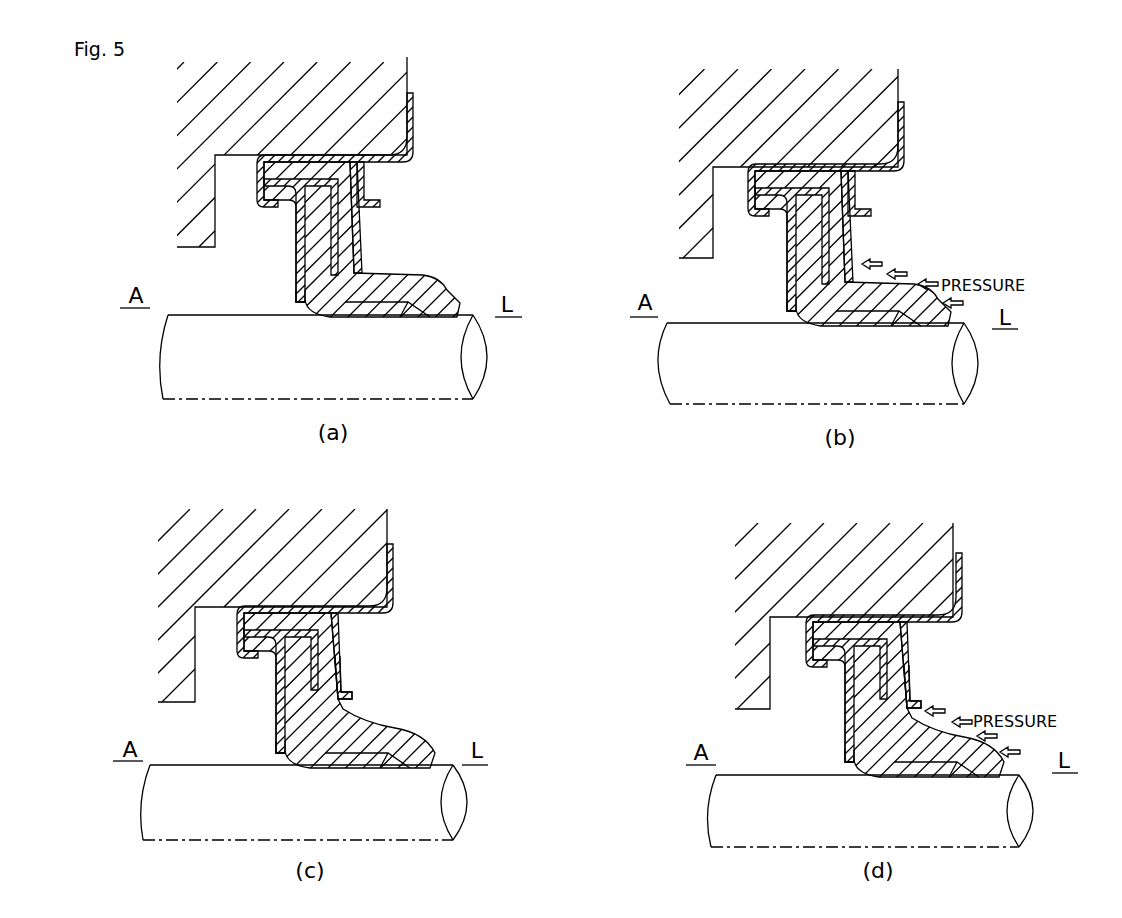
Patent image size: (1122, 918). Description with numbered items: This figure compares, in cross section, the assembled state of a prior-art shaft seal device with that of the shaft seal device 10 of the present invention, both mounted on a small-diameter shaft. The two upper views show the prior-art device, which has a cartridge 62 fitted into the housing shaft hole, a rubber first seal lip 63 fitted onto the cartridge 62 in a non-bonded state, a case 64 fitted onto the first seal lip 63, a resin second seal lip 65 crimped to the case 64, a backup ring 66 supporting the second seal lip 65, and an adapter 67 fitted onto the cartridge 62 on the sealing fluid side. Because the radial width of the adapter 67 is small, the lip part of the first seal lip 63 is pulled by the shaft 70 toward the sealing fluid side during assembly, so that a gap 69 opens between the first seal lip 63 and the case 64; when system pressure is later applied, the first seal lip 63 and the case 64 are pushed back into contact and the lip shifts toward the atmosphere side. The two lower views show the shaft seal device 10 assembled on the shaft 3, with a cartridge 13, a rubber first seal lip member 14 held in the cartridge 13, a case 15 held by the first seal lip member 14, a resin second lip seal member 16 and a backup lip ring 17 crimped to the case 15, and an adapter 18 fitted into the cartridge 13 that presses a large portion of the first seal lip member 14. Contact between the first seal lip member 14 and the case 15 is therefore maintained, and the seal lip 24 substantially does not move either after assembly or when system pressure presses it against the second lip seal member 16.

The cartridge 62 is at (416, 121).
The first seal lip 63 is at (352, 254).
The case 64 is at (356, 215).
The second seal lip 65 is at (315, 303).
The backup ring 66 is at (299, 256).
The adapter 67 is at (364, 187).
The gap 69 is at (377, 281).
The shaft 70 is at (178, 373).
The cartridge 13 is at (392, 566).
The first seal lip member 14 is at (345, 713).
The case 15 is at (345, 680).
The second lip seal member 16 is at (300, 760).
The backup lip ring 17 is at (277, 690).
The adapter 18 is at (340, 635).
The seal lip 24 is at (400, 752).
The shaft seal device 10 is at (571, 688).
The shaft 3 is at (158, 826).